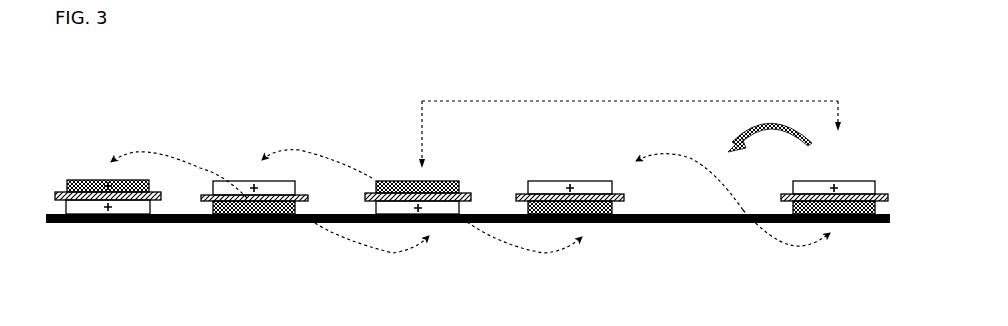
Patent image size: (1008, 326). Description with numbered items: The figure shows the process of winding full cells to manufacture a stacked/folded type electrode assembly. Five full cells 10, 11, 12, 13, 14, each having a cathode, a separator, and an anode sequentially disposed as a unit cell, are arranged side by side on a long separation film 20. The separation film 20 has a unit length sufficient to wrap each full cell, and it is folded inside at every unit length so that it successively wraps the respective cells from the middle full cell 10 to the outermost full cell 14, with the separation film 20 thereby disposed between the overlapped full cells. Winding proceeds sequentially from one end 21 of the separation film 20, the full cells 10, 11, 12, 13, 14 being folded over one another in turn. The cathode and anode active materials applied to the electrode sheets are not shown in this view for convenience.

The middle full cell 10 is at (834, 181).
The full cell 11 is at (555, 181).
The full cell 12 is at (405, 181).
The full cell 13 is at (235, 181).
The outermost full cell 14 is at (93, 181).
The separation film 20 is at (188, 225).
The end of separation film 21 is at (889, 220).